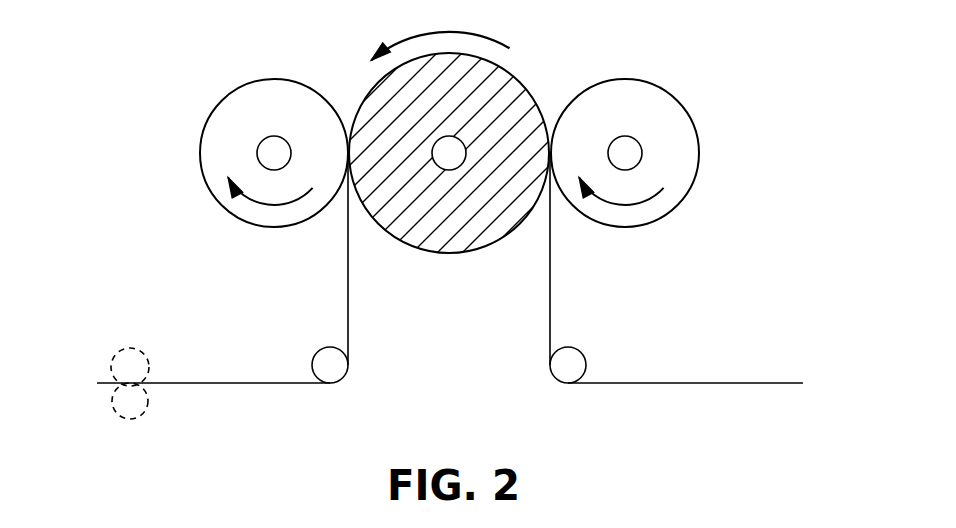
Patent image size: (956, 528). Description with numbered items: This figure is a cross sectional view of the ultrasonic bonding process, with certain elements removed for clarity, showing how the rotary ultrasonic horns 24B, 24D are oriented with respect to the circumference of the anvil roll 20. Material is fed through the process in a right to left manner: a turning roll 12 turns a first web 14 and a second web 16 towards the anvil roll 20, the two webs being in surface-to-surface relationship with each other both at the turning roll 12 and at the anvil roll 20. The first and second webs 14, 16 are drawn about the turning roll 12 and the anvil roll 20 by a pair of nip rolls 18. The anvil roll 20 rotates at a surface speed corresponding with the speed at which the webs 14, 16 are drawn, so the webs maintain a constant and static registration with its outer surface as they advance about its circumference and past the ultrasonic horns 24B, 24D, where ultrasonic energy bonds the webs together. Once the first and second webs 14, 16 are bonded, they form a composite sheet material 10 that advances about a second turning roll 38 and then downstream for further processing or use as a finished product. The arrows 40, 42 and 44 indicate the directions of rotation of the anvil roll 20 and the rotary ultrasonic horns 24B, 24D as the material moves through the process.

The composite sheet material 10 is at (212, 383).
The turning roll 12 is at (570, 363).
The first web 14 is at (697, 337).
The second web 16 is at (752, 380).
The nip rolls 18 is at (123, 360).
The anvil roll 20 is at (452, 230).
The rotary ultrasonic horn 24B is at (680, 137).
The rotary ultrasonic horn 24D is at (216, 138).
The second turning roll 38 is at (338, 367).
The arrow 40 is at (622, 207).
The arrow 42 is at (272, 205).
The arrow 44 is at (467, 32).